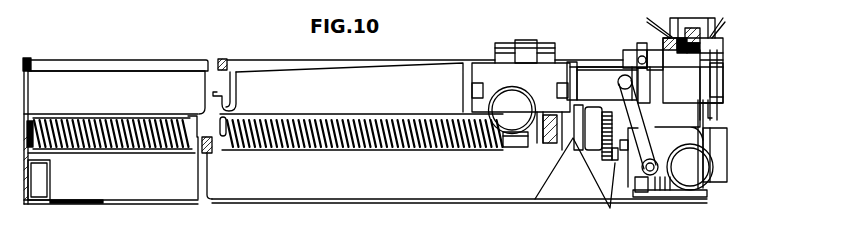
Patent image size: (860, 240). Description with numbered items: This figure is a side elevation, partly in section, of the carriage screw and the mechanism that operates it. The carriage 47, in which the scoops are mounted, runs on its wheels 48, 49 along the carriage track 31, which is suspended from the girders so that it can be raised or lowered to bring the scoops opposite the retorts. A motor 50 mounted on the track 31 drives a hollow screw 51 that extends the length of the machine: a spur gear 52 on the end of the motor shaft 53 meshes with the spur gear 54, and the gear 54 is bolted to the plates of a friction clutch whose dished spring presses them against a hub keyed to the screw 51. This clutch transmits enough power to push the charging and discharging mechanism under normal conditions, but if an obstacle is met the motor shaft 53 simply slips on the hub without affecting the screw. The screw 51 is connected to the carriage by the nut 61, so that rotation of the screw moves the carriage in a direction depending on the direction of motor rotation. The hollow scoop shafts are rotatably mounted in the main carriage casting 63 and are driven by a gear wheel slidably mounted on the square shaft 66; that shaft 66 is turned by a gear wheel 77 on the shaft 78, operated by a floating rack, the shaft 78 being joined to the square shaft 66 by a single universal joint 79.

The carriage track 31 is at (314, 202).
The carriage 47 is at (490, 63).
The wheel 48 is at (512, 117).
The wheel 49 is at (680, 132).
The motor 50 is at (631, 181).
The hollow screw 51 is at (422, 147).
The spur gear 52 is at (599, 167).
The motor shaft 53 is at (615, 163).
The spur gear 54 is at (606, 110).
The nut 61 is at (539, 149).
The main carriage casting 63 is at (549, 53).
The square shaft 66 is at (283, 61).
The gear wheel 77 is at (712, 56).
The shaft 78 is at (713, 61).
The single universal joint 79 is at (633, 53).